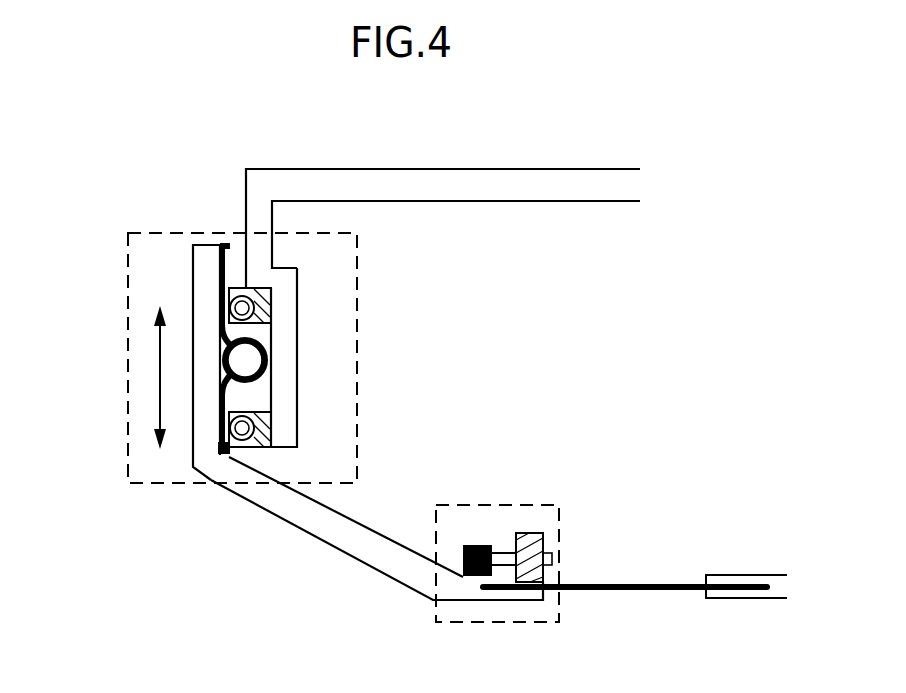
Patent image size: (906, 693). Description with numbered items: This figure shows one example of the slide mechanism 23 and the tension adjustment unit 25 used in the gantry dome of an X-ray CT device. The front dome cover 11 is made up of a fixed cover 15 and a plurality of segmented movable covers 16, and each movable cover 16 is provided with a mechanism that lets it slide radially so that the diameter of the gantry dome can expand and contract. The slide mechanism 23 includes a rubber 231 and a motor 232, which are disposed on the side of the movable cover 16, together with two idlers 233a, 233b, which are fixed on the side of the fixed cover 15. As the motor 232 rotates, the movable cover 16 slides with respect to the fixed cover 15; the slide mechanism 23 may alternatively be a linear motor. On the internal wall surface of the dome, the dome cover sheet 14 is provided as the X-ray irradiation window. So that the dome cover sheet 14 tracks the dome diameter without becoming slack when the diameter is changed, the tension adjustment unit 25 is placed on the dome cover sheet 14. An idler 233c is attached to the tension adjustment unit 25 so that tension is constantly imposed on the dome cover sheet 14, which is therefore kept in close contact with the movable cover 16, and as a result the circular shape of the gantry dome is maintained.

The front dome cover 11 is at (467, 196).
The fixed cover 15 is at (456, 234).
The slide mechanism 23 is at (128, 320).
The rubber 231 is at (232, 272).
The motor 232 is at (240, 360).
The idler 233a is at (250, 308).
The idler 233b is at (250, 427).
The idler 233c is at (537, 532).
The tension adjustment unit 25 is at (458, 505).
The dome cover sheet 14 is at (637, 582).
The movable cover 16 is at (295, 525).